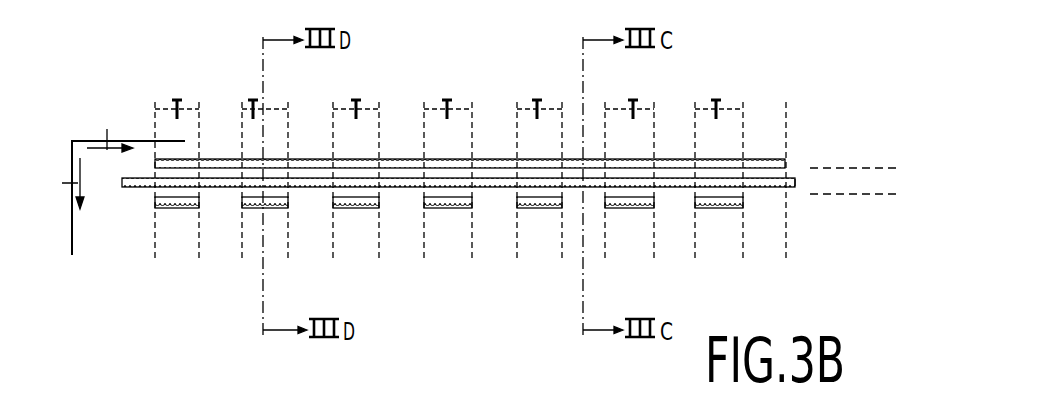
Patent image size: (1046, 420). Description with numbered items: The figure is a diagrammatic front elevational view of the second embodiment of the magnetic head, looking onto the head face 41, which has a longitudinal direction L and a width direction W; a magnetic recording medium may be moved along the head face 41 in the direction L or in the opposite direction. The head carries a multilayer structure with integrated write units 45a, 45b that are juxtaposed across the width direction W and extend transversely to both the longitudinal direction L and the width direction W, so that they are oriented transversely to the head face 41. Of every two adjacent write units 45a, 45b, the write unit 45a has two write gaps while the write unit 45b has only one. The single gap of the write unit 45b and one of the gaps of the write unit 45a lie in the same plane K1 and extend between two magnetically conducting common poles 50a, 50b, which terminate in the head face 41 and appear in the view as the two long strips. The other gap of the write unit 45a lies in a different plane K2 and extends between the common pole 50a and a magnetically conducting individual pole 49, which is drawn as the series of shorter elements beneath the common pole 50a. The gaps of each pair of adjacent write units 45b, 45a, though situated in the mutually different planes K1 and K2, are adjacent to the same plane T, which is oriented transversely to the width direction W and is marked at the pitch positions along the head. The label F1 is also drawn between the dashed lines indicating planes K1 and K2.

The head face 41 is at (95, 170).
The width direction W is at (110, 134).
The longitudinal direction L is at (66, 183).
The write unit 45a is at (498, 248).
The write unit 45b is at (783, 96).
The individual pole 49 is at (743, 202).
The common pole 50a is at (788, 183).
The common pole 50b is at (785, 165).
The plane T is at (788, 108).
The plane K1 is at (878, 167).
The plane K2 is at (870, 195).
The reference plane F1 is at (864, 180).